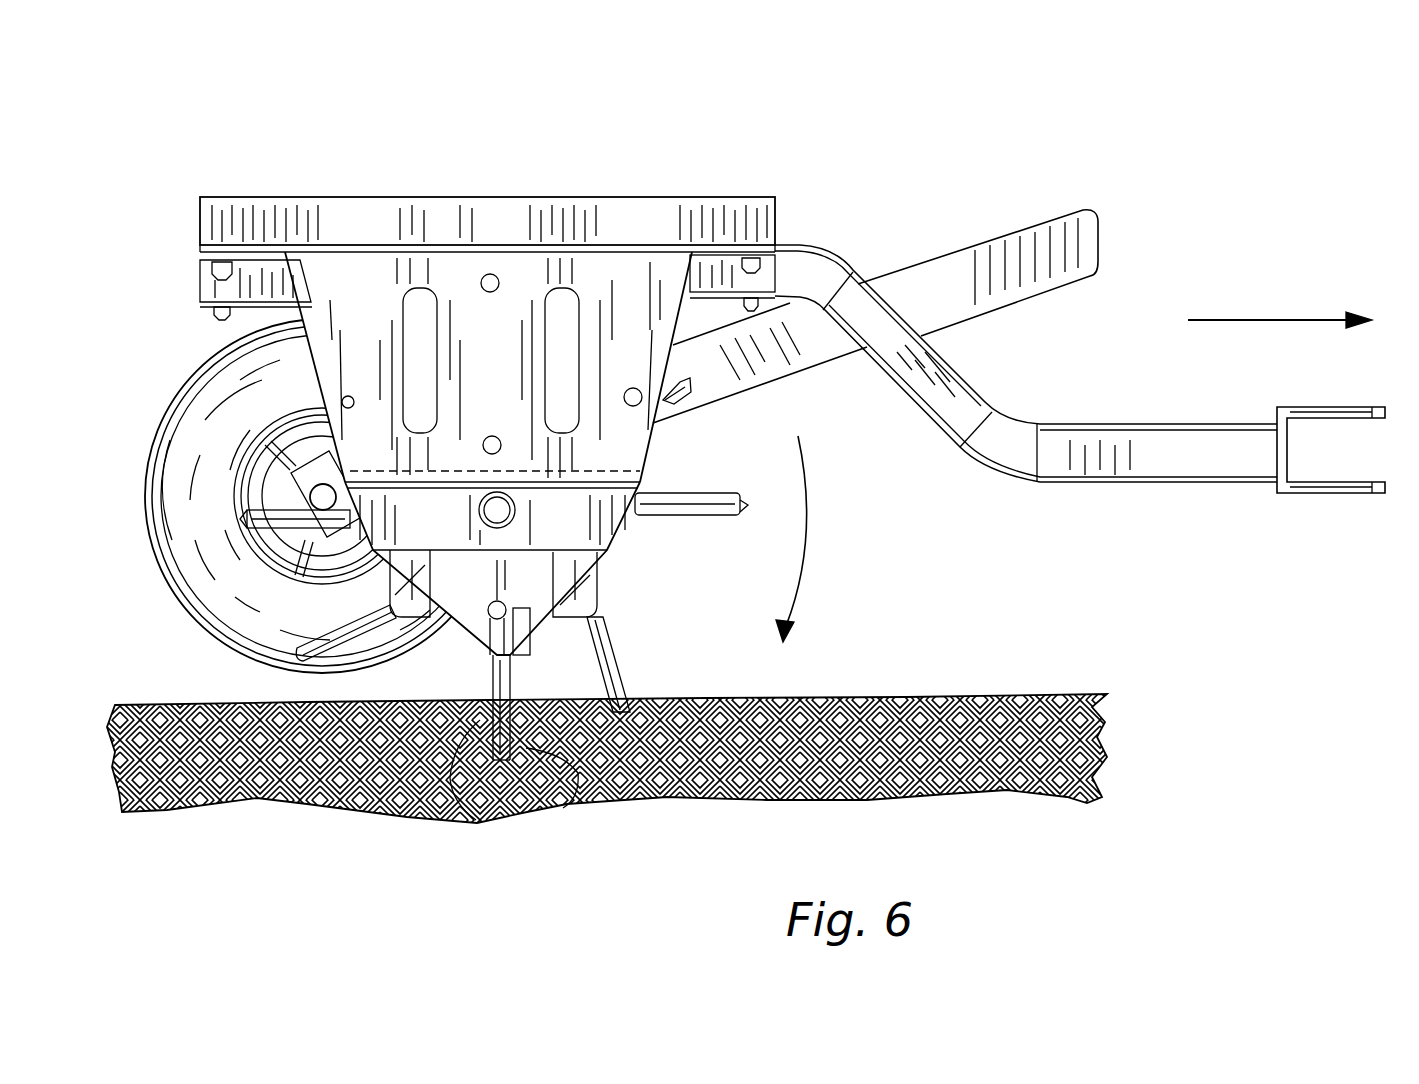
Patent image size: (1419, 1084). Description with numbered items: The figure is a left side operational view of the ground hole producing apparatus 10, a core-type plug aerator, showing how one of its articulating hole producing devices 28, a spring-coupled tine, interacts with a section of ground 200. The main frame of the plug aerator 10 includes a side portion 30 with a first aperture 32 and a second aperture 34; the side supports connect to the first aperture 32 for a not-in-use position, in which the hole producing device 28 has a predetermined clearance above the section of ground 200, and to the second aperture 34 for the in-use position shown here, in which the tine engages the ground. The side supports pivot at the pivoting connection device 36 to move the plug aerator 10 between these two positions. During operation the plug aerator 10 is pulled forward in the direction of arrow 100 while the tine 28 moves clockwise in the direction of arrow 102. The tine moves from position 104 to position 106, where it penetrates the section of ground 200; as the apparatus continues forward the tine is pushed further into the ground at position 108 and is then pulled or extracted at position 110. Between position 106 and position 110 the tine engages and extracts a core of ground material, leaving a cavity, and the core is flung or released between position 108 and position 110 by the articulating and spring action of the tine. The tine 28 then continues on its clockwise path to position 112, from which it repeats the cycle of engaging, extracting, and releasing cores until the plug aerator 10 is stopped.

The ground hole producing apparatus 10 is at (735, 487).
The articulating hole producing device 28 is at (427, 652).
The side portion 30 is at (488, 453).
The first aperture 32 is at (494, 436).
The second aperture 34 is at (350, 396).
The pivoting connection device 36 is at (499, 285).
The arrow 100 is at (1298, 312).
The arrow 102 is at (816, 530).
The position 104 is at (692, 536).
The position 106 is at (644, 674).
The position 108 is at (568, 803).
The position 110 is at (305, 603).
The position 112 is at (232, 541).
The section of ground 200 is at (952, 696).